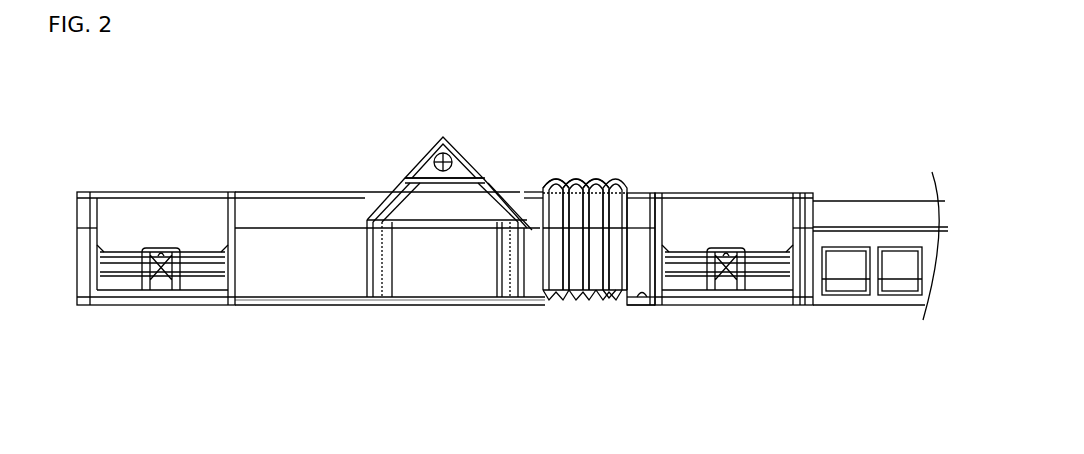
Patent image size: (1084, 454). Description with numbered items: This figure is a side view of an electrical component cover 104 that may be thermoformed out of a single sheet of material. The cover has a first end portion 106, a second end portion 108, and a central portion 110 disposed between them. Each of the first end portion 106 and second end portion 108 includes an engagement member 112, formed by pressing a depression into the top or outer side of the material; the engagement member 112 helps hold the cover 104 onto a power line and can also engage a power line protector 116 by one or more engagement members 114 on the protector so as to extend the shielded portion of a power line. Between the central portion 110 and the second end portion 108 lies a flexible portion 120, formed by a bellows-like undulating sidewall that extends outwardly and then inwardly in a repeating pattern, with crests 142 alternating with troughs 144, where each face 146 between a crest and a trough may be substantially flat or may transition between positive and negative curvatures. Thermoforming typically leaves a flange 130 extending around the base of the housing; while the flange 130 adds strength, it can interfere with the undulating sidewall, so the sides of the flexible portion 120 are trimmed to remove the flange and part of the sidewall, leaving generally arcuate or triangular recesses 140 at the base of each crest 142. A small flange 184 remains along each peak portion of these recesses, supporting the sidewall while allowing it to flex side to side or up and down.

The electrical component cover 104 is at (390, 105).
The first end portion 106 is at (170, 192).
The second end portion 108 is at (812, 192).
The central portion 110 is at (487, 178).
The engagement member 112 is at (168, 305).
The engagement member 114 is at (888, 273).
The power line protector 116 is at (847, 210).
The flexible portion 120 is at (628, 172).
The flange 130 is at (642, 298).
The recess 140 is at (597, 297).
The pleat 142 is at (577, 172).
The trough 144 is at (607, 298).
The face 146 is at (587, 172).
The flange 184 is at (628, 268).